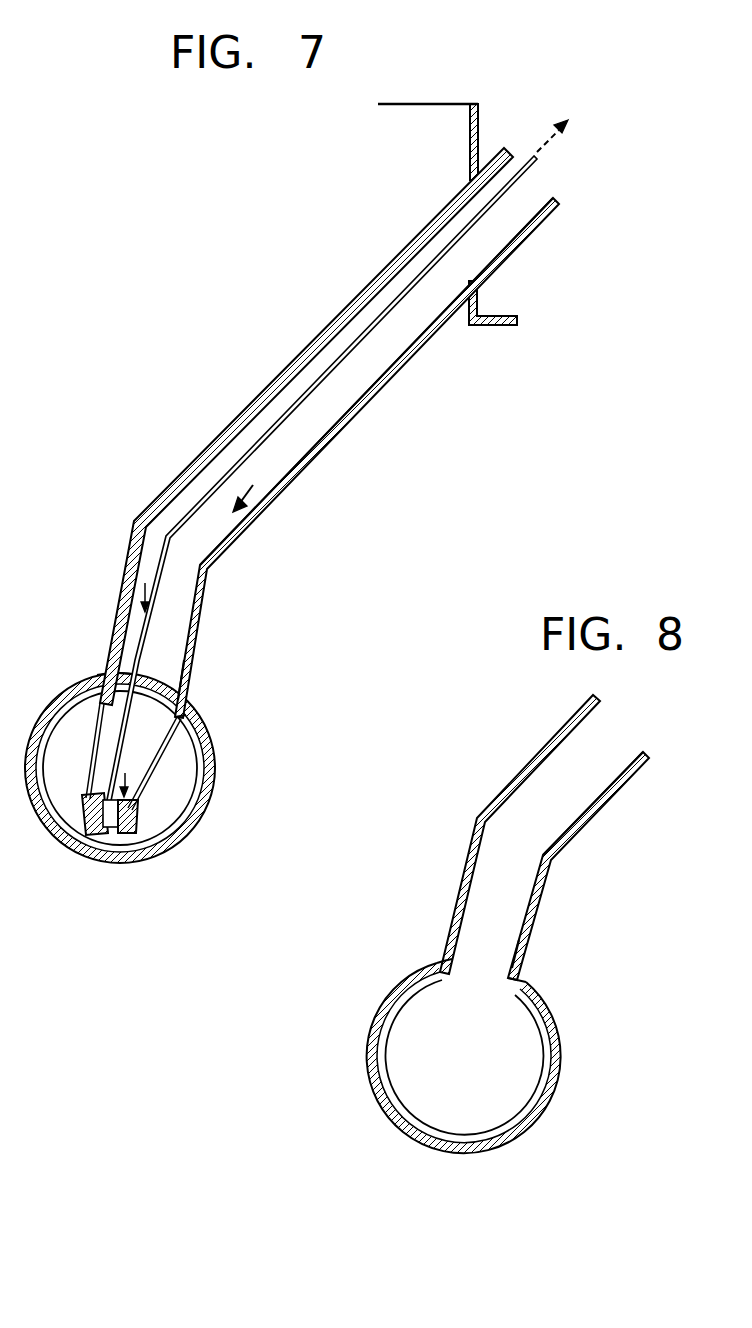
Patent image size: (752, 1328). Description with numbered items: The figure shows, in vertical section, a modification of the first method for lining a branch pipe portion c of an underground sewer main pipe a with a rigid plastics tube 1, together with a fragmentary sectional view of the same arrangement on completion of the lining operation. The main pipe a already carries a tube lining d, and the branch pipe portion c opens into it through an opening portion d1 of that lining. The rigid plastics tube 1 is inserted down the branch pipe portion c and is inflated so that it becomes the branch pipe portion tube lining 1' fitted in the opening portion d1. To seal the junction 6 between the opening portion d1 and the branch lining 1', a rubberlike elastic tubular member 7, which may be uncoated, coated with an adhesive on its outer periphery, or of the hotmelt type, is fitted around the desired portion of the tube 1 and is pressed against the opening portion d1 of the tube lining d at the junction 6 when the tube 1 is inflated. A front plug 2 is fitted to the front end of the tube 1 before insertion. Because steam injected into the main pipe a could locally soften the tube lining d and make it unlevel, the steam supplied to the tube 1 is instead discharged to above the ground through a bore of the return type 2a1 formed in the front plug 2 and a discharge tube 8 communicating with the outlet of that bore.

In FIG. 7, the rigid plastics tube 1 is at (329, 473).
In FIG. 7, the discharge tube 8 is at (310, 388).
In FIG. 7, the branch pipe portion tube lining 1' is at (343, 504).
In FIG. 8, the branch pipe portion tube lining 1' is at (592, 866).
In FIG. 7, the branch pipe portion c is at (400, 370).
In FIG. 8, the branch pipe portion c is at (652, 777).
In FIG. 7, the rubberlike elastic tubular member 7 is at (183, 672).
In FIG. 8, the rubberlike elastic tubular member 7 is at (527, 957).
In FIG. 7, the junction 6 is at (183, 698).
In FIG. 8, the junction 6 is at (530, 980).
In FIG. 7, the tube lining d is at (212, 773).
In FIG. 8, the tube lining d is at (555, 1082).
In FIG. 7, the opening portion d1 is at (97, 675).
In FIG. 8, the opening portion d1 is at (440, 967).
In FIG. 7, the sewer main pipe a is at (198, 823).
In FIG. 8, the sewer main pipe a is at (460, 1145).
In FIG. 7, the front plug 2 is at (80, 853).
In FIG. 7, the bore of the return type 2a1 is at (132, 853).